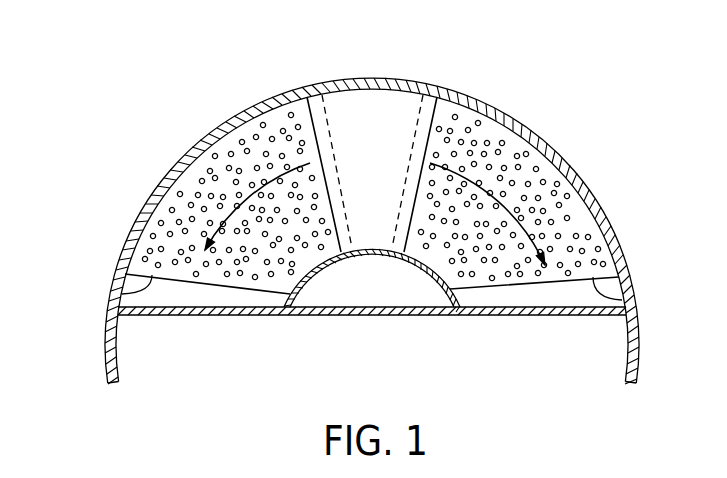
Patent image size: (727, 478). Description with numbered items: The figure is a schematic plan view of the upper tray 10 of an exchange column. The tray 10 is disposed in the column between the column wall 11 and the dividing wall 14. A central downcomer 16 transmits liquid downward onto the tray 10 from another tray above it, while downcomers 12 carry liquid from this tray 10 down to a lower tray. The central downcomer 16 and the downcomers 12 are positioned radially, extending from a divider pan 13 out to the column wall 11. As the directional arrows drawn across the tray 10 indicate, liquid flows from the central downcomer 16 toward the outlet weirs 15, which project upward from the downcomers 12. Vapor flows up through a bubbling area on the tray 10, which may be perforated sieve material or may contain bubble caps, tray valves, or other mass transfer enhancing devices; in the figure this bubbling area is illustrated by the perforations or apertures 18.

The upper tray 10 is at (602, 106).
The column wall 11 is at (257, 103).
The downcomers 12 is at (165, 290).
The divider pan 13 is at (373, 257).
The dividing wall 14 is at (142, 316).
The outlet weirs 15 is at (123, 291).
The central downcomer 16 is at (374, 152).
The perforations or apertures 18 is at (574, 214).